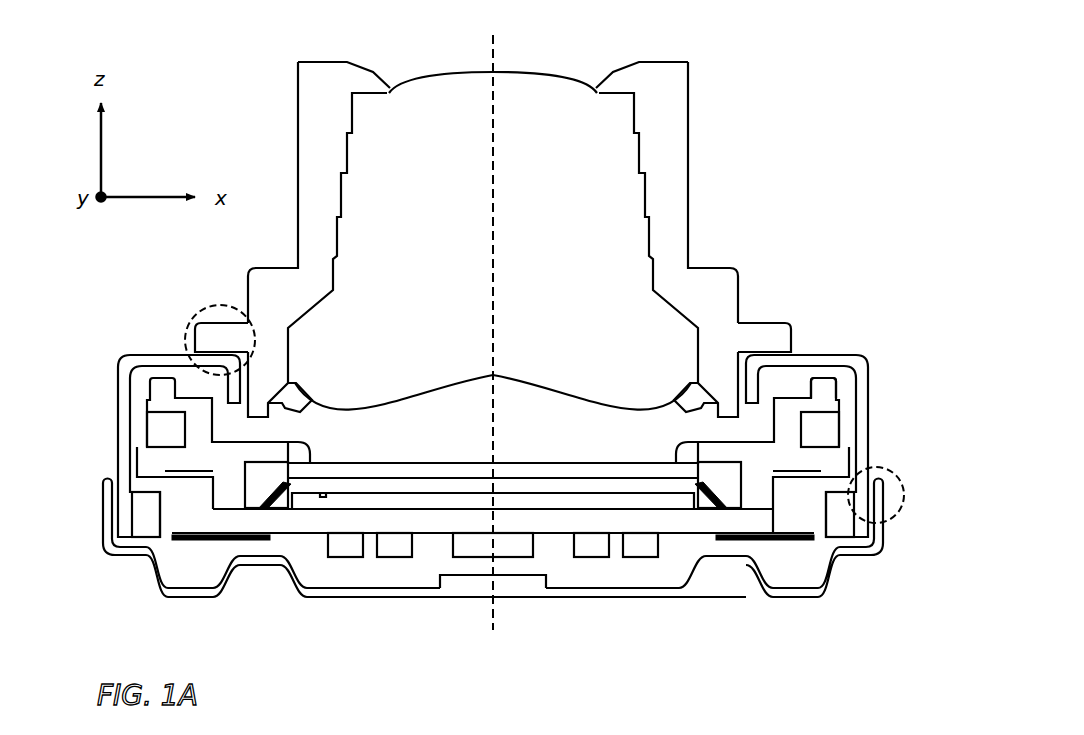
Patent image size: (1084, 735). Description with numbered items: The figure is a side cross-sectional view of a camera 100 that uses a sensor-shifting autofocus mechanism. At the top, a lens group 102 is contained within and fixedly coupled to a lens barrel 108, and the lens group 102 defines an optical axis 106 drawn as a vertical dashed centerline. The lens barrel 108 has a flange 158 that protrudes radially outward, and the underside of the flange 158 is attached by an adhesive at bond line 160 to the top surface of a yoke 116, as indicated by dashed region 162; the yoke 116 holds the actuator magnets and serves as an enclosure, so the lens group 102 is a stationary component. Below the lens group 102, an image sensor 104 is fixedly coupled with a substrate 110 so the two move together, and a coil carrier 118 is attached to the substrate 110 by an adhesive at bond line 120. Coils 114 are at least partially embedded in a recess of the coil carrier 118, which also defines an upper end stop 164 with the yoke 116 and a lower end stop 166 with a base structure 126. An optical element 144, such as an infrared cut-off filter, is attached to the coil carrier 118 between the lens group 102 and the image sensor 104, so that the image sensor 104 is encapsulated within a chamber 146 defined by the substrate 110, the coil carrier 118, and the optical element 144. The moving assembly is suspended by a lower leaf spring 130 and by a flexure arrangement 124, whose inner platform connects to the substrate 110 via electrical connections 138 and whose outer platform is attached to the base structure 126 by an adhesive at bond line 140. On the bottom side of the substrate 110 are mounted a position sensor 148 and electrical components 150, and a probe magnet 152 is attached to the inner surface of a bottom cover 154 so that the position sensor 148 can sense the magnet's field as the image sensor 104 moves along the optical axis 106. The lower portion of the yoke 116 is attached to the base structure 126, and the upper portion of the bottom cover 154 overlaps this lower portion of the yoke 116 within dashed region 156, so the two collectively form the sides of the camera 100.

The camera 100 is at (748, 70).
The lens group 102 is at (537, 92).
The image sensor 104 is at (502, 503).
The optical axis 106 is at (488, 56).
The lens barrel 108 is at (712, 282).
The substrate 110 is at (678, 537).
The coil 114 is at (165, 428).
The yoke 116 is at (823, 362).
The coil carrier 118 is at (132, 447).
The bond line 120 is at (213, 517).
The flexure arrangement 124 is at (809, 545).
The base structure 126 is at (850, 518).
The lower leaf spring 130 is at (805, 455).
The electrical connections 138 is at (255, 542).
The bond line 140 is at (132, 545).
The optical element 144 is at (493, 448).
The chamber 146 is at (493, 464).
The position sensor 148 is at (517, 545).
The electrical component 150 is at (352, 561).
The probe magnet 152 is at (518, 580).
The bottom cover 154 is at (808, 592).
The dashed region 156 is at (905, 488).
The flange 158 is at (209, 307).
The bond line 160 is at (197, 352).
The dashed region 162 is at (205, 320).
The upper end stop 164 is at (877, 366).
The lower end stop 166 is at (844, 446).